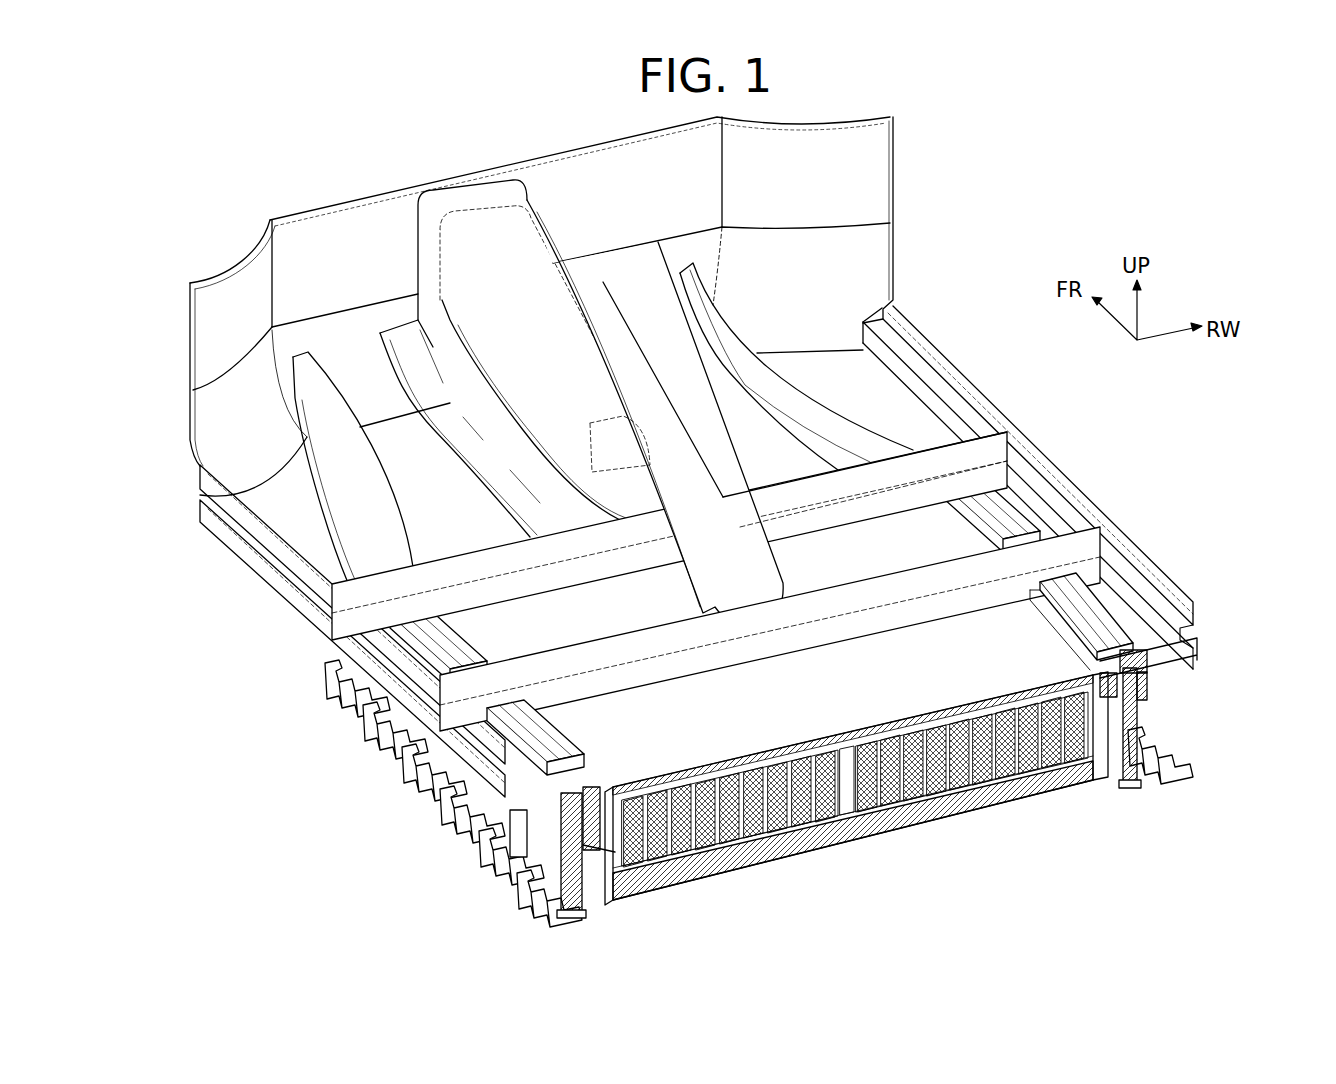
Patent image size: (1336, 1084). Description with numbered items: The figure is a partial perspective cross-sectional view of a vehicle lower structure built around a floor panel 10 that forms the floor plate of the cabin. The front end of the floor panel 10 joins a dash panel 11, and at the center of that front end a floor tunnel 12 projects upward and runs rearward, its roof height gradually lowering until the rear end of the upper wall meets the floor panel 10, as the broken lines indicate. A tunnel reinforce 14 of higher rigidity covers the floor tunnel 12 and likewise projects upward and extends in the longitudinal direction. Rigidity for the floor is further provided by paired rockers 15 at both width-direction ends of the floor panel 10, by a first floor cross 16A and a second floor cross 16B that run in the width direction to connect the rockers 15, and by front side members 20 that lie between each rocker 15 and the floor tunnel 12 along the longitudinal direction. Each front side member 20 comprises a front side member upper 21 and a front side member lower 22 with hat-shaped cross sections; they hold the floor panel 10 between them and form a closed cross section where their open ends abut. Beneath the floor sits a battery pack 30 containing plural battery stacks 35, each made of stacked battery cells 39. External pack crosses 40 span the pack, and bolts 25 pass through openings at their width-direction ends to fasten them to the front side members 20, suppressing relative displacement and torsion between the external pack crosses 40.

The floor panel 10 is at (1042, 645).
The dash panel 11 is at (880, 172).
The floor tunnel 12 is at (553, 243).
The tunnel reinforce 14 is at (580, 273).
The rocker 15 is at (940, 350).
The first floor cross 16A is at (943, 570).
The second floor cross 16B is at (933, 455).
The front side member 20 is at (715, 345).
The front side member upper 21 is at (1123, 637).
The front side member lower 22 is at (1147, 680).
The bolt 25 is at (573, 915).
The battery pack 30 is at (595, 865).
The battery stack 35 is at (830, 757).
The battery cell 39 is at (837, 822).
The external pack cross 40 is at (340, 702).